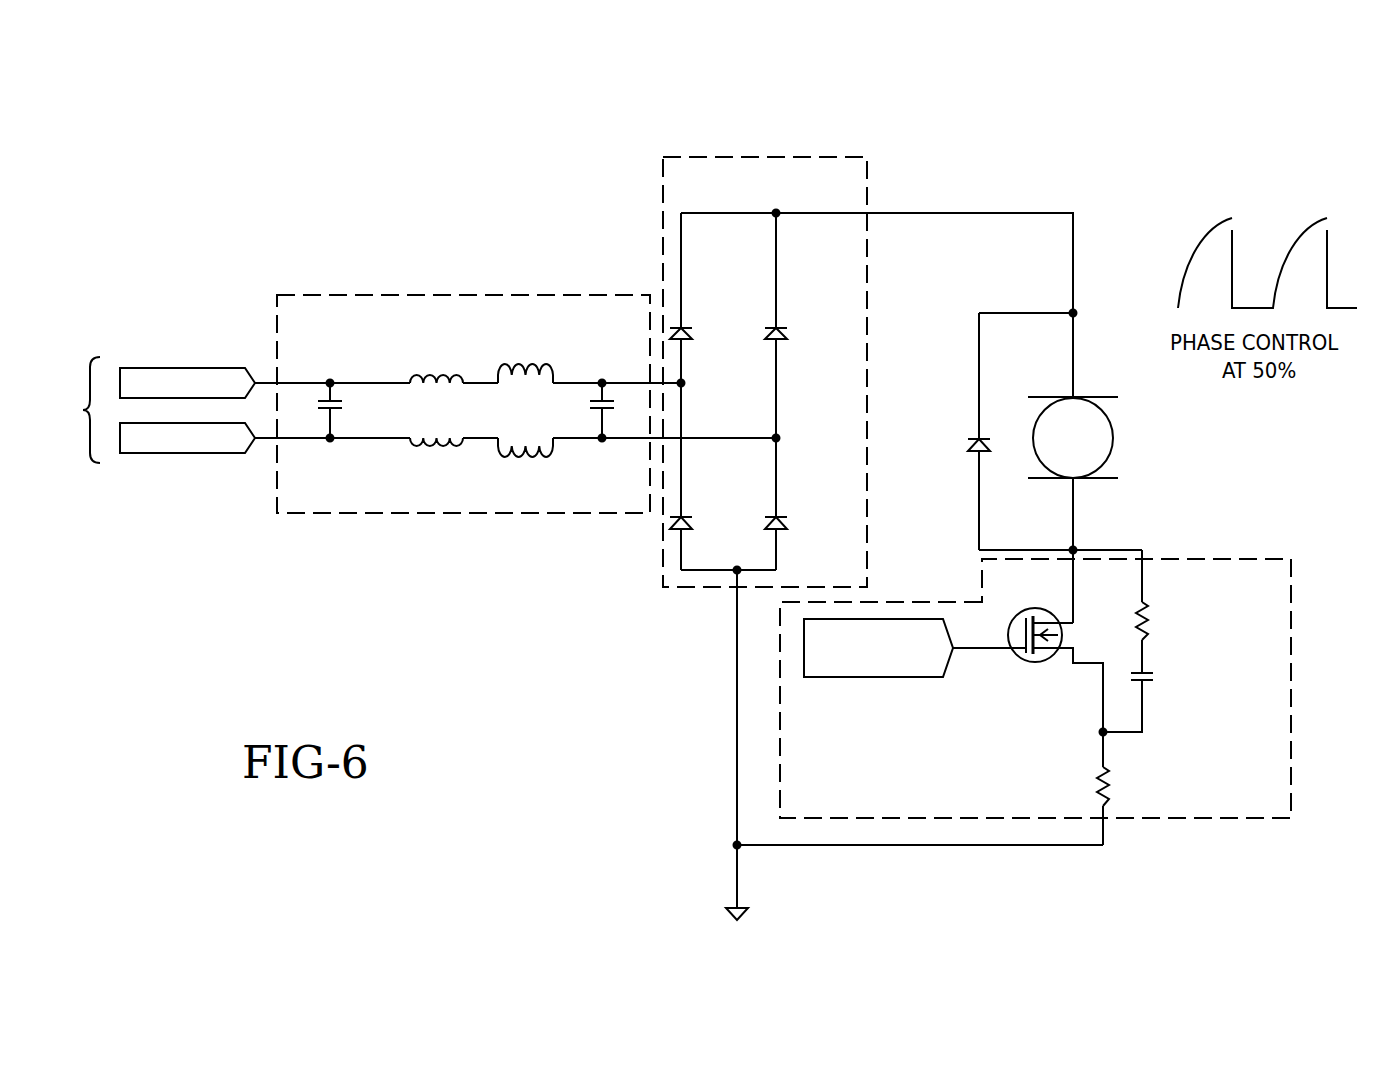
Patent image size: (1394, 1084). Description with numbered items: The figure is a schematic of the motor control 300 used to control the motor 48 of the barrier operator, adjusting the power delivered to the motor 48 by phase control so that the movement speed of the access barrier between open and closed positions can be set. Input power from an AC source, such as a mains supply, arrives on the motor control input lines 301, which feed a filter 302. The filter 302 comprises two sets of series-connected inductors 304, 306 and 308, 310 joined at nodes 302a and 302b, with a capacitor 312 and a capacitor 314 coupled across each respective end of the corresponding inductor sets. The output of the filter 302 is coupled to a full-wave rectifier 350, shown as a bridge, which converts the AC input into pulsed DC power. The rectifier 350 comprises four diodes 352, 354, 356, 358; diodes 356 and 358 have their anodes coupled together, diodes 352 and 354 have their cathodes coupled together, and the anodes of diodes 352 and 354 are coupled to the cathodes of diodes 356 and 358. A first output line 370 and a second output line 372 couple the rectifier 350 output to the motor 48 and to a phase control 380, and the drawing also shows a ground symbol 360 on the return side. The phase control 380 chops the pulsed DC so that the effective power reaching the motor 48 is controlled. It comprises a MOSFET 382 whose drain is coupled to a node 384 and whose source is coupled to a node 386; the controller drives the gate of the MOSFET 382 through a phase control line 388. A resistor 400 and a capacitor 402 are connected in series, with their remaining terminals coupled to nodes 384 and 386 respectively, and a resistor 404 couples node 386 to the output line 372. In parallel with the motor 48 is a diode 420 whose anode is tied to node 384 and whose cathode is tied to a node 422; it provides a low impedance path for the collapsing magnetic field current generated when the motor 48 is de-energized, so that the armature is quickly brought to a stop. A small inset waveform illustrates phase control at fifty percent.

The motor control 300 is at (496, 172).
The motor control input lines 301 is at (141, 410).
The filter 302 is at (385, 295).
The node 302a is at (330, 383).
The node 302b is at (600, 383).
The inductor 304 is at (445, 378).
The inductor 306 is at (518, 365).
The inductor 308 is at (447, 443).
The inductor 310 is at (520, 457).
The capacitor 312 is at (336, 410).
The capacitor 314 is at (598, 410).
The full-wave rectifier 350 is at (750, 157).
The diode 352 is at (683, 331).
The diode 354 is at (778, 331).
The diode 356 is at (683, 519).
The diode 358 is at (778, 519).
The ground 360 is at (745, 915).
The first output line 370 is at (975, 213).
The second output line 372 is at (737, 787).
The phase control 380 is at (1292, 597).
The MOSFET 382 is at (1022, 661).
The node 384 is at (1076, 548).
The node 386 is at (1100, 733).
The phase control line 388 is at (893, 677).
The resistor 400 is at (1145, 625).
The capacitor 402 is at (1145, 668).
The resistor 404 is at (1105, 778).
The diode 420 is at (977, 441).
The node 422 is at (1075, 313).
The motor 48 is at (1113, 432).